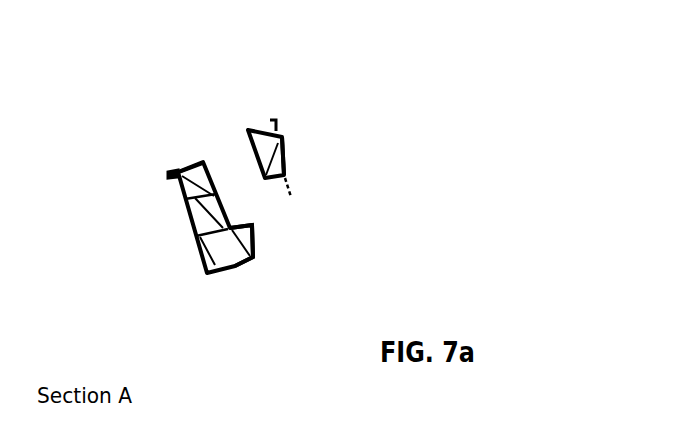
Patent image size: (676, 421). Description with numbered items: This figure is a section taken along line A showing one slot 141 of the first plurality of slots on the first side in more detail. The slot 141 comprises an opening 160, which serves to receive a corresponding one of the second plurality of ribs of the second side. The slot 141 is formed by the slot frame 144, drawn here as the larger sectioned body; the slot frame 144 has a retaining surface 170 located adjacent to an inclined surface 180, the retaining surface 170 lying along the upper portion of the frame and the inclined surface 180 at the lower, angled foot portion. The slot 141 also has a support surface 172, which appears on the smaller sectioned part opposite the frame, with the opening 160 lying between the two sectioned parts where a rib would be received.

The slot 141 is at (323, 142).
The slot frame 144 is at (170, 233).
The opening 160 is at (270, 198).
The retaining surface 170 is at (223, 163).
The support surface 172 is at (293, 167).
The inclined surface 180 is at (253, 258).